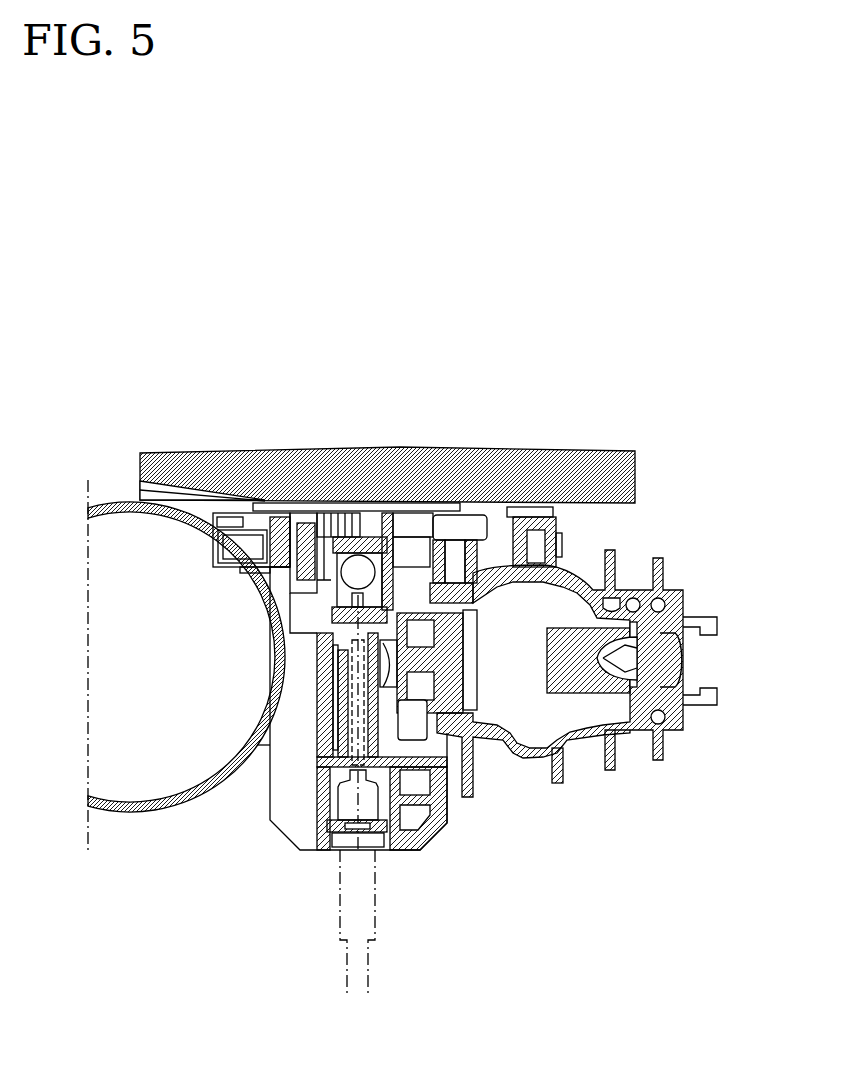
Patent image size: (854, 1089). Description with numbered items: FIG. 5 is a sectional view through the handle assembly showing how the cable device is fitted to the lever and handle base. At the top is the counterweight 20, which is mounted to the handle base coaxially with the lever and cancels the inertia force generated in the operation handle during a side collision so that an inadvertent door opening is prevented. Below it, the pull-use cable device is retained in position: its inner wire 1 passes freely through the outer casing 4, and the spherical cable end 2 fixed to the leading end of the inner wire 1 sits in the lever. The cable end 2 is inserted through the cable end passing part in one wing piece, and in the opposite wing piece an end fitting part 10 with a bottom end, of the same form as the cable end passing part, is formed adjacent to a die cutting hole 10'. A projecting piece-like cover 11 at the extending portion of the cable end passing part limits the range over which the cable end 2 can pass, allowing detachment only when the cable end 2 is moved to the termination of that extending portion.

The inner wire 1 is at (313, 747).
The cable end 2 is at (358, 448).
The outer casing 4 is at (367, 913).
The end fitting part 10 is at (548, 706).
The die cutting hole 10' is at (472, 497).
The cover 11 is at (293, 515).
The counterweight 20 is at (540, 449).